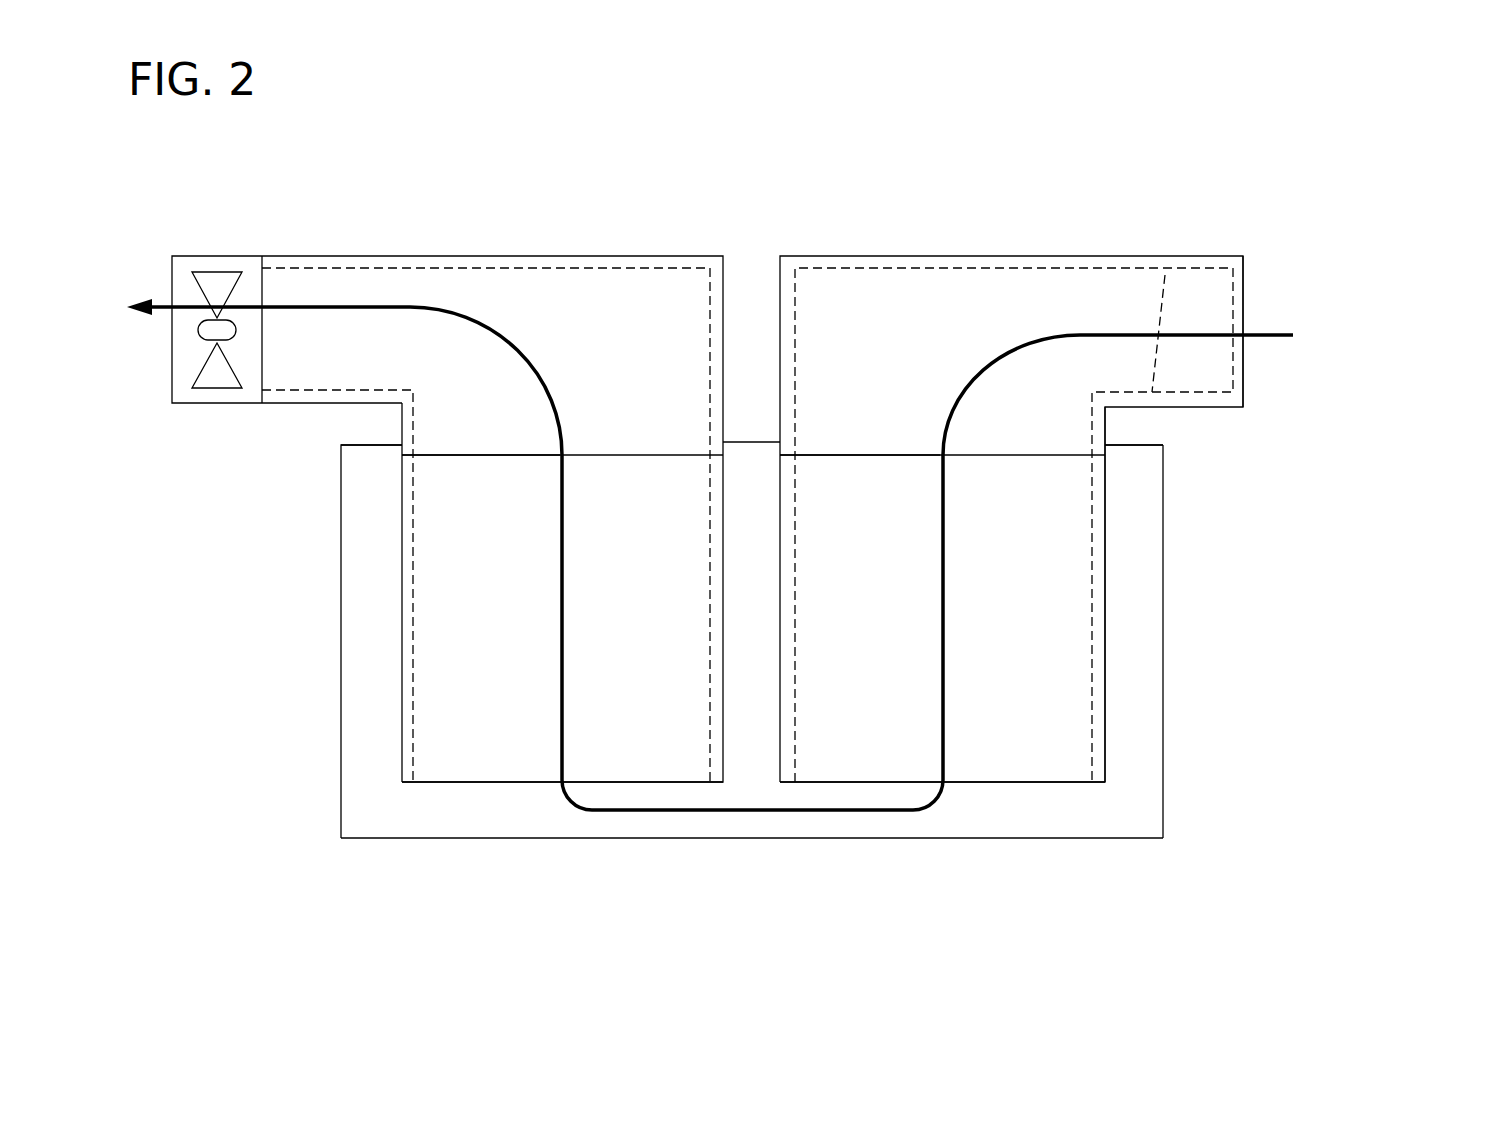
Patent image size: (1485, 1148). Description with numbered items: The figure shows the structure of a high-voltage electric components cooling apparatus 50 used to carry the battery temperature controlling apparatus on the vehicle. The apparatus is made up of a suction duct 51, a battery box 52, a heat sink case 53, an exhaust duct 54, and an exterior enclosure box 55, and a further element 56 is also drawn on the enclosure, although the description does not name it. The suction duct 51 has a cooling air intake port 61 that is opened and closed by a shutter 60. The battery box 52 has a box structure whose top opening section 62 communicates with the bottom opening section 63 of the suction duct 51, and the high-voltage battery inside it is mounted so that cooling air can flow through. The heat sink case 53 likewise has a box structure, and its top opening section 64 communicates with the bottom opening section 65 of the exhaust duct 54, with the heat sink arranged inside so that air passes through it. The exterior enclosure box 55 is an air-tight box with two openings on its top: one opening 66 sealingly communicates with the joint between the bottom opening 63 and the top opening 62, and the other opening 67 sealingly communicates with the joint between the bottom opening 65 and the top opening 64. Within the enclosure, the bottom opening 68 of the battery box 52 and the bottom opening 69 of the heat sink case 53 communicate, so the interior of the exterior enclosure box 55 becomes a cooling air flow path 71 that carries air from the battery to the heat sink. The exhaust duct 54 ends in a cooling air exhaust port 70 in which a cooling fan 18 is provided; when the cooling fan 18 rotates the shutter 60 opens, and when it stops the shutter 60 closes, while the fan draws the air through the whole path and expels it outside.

The cooling fan 18 is at (214, 255).
The high-voltage electric components cooling apparatus 50 is at (755, 252).
The suction duct 51 is at (1026, 255).
The battery box 52 is at (1105, 566).
The heat sink case 53 is at (402, 582).
The exhaust duct 54 is at (506, 254).
The exterior enclosure box 55 is at (1165, 677).
The outer bottom wall 56 is at (1165, 782).
The shutter 60 is at (1165, 275).
The cooling air intake port 61 is at (1245, 300).
The top opening section of battery box 62 is at (1017, 454).
The bottom opening section of suction duct 63 is at (867, 458).
The top opening section of heat sink case 64 is at (641, 454).
The bottom opening section of exhaust duct 65 is at (507, 458).
The opening of exterior enclosure box 66 is at (1105, 446).
The opening of exterior enclosure box 67 is at (402, 444).
The bottom opening of battery box 68 is at (1005, 784).
The bottom opening of heat sink case 69 is at (507, 784).
The cooling air exhaust port 70 is at (258, 282).
The cooling air flow path 71 is at (762, 838).